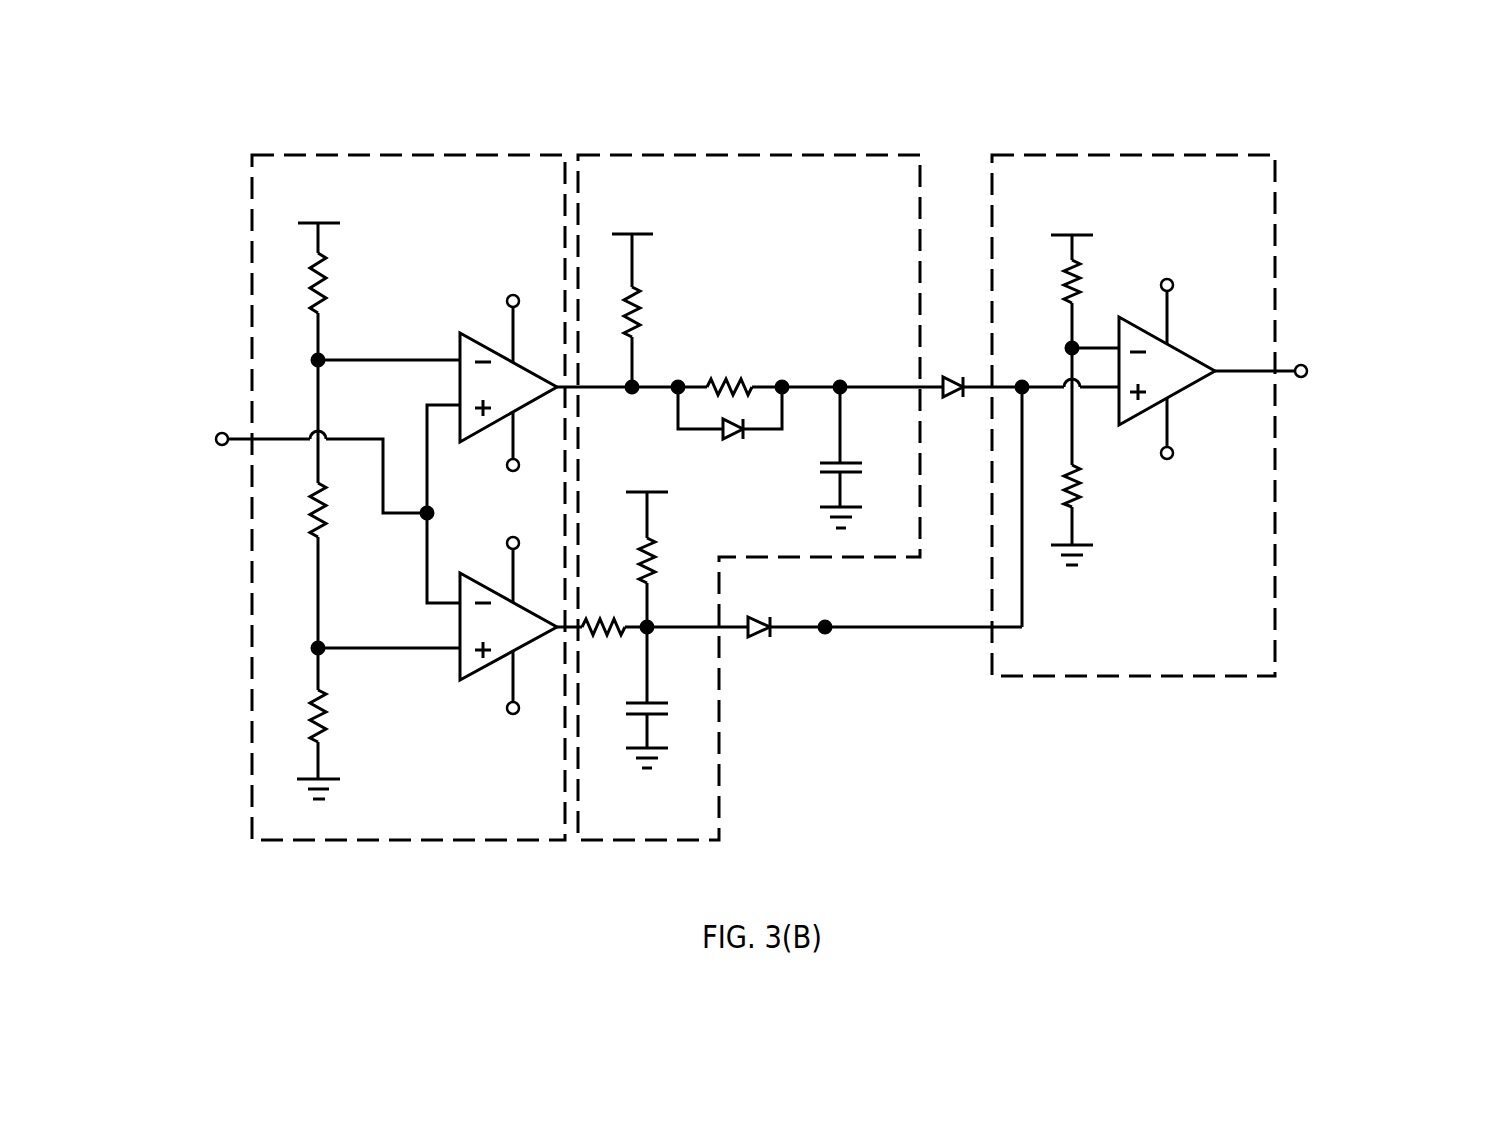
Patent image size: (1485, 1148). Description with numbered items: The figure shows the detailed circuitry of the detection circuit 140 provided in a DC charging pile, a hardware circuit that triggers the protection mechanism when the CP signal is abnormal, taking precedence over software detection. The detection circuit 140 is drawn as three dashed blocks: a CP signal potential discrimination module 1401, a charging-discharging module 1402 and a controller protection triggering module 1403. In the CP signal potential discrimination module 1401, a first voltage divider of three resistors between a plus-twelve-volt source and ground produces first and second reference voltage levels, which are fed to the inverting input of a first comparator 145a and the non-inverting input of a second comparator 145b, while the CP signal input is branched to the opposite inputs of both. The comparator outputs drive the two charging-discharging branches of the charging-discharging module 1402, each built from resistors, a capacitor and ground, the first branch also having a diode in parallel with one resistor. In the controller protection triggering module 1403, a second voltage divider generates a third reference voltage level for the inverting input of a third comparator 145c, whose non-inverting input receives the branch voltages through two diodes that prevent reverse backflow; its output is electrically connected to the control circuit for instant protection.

The detection circuit 140 is at (168, 82).
The CP signal potential discrimination module 1401 is at (398, 150).
The charging-discharging module 1402 is at (740, 152).
The controller protection triggering module 1403 is at (1142, 152).
The first comparator 145a is at (480, 330).
The second comparator 145b is at (476, 675).
The third comparator 145c is at (1178, 342).